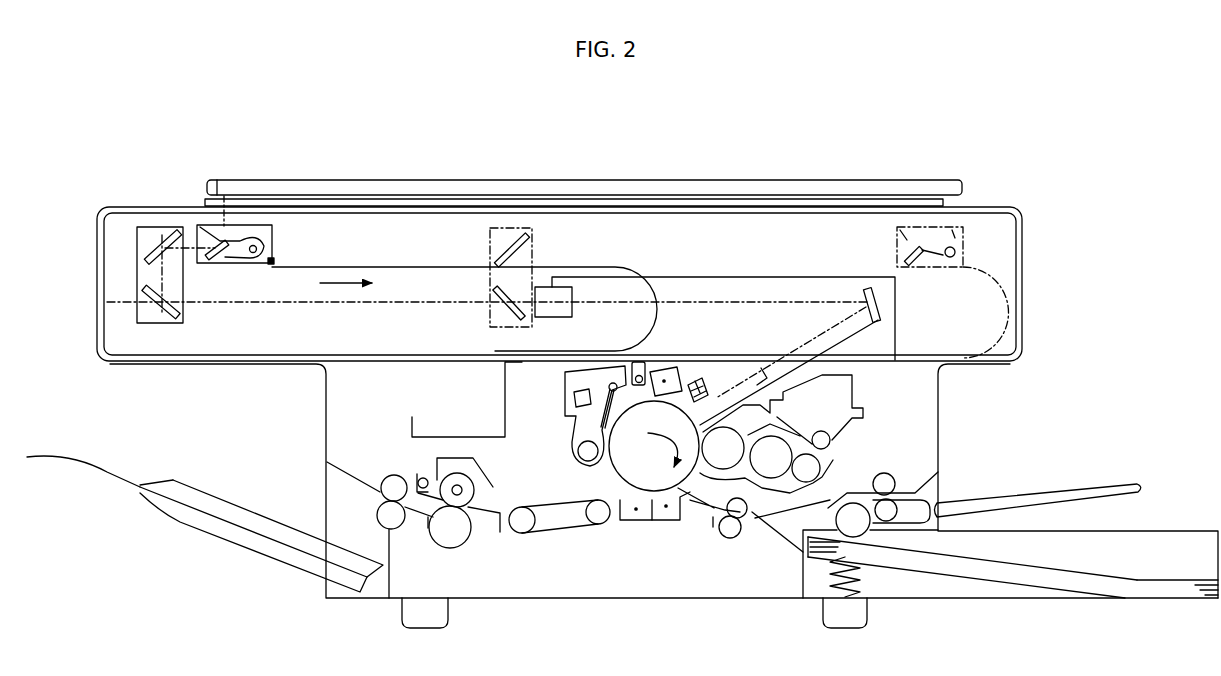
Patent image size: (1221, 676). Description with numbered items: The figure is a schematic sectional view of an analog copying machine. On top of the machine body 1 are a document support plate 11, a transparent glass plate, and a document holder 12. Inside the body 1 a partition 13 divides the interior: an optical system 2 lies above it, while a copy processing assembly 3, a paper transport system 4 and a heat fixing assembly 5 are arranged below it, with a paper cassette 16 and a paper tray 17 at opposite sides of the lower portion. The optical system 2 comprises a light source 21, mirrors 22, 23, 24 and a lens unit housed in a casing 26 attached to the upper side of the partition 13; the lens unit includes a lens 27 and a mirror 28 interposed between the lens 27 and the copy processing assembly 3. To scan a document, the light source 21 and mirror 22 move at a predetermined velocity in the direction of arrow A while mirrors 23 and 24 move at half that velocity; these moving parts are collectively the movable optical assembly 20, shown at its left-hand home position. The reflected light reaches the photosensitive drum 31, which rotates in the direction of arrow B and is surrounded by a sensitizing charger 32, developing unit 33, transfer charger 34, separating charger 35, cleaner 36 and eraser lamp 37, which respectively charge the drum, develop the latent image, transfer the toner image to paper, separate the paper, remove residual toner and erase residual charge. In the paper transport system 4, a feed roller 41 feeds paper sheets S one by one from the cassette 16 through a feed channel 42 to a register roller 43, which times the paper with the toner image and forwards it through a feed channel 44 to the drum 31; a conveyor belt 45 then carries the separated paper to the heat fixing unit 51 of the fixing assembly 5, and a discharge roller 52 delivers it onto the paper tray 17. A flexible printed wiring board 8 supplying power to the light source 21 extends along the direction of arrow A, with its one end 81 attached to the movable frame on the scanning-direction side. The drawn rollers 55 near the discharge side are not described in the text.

The machine body 1 is at (1028, 248).
The optical system 2 is at (745, 247).
The copy processing assembly 3 is at (644, 524).
The paper transport system 4 is at (656, 568).
The heat fixing assembly 5 is at (454, 553).
The flexible printed wiring board 8 is at (492, 321).
The document support plate 11 is at (478, 204).
The document holder 12 is at (563, 191).
The partition 13 is at (461, 358).
The paper cassette 16 is at (1010, 556).
The paper tray 17 is at (247, 543).
The movable optical assembly 20 is at (148, 246).
The light source 21 is at (260, 249).
The mirror 22 is at (223, 259).
The mirror 23 is at (157, 246).
The mirror 24 is at (157, 308).
The casing 26 is at (692, 289).
The lens 27 is at (560, 306).
The mirror 28 is at (881, 312).
The photosensitive drum 31 is at (621, 490).
The sensitizing charger 32 is at (681, 380).
The developing unit 33 is at (706, 482).
The transfer charger 34 is at (665, 521).
The separating charger 35 is at (632, 522).
The cleaner 36 is at (575, 441).
The eraser lamp 37 is at (630, 373).
The feed roller 41 is at (852, 503).
The feed channel 42 is at (765, 520).
The register roller 43 is at (731, 540).
The feed channel 44 is at (713, 517).
The conveyor belt 45 is at (568, 530).
The heat fixing unit 51 is at (472, 505).
The discharge roller 52 is at (406, 527).
The discharge roller pair 55 is at (385, 521).
The one end of wiring board 81 is at (273, 265).
The scanning direction arrow A is at (347, 284).
The drum rotation arrow B is at (651, 445).
The paper sheets S is at (977, 568).